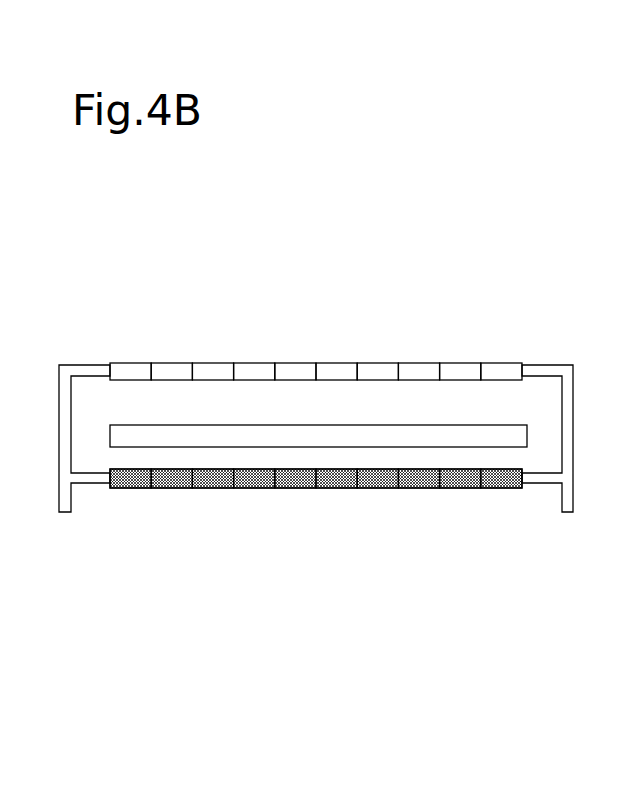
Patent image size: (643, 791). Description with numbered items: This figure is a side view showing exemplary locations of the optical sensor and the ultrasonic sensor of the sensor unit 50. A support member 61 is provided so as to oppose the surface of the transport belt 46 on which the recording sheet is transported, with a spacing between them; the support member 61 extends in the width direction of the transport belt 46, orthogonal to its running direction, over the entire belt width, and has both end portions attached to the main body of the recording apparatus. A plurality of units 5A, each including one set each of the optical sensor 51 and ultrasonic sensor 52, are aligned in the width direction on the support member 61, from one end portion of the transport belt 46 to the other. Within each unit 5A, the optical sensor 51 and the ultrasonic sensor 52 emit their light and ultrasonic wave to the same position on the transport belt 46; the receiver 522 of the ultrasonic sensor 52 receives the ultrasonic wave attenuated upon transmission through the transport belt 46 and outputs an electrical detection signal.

The unit 5A is at (127, 267).
The optical sensor 51 is at (130, 363).
The transport belt 46 is at (513, 425).
The receiver 522 is at (125, 488).
The ultrasonic sensor 52 is at (316, 478).
The support member 61 is at (90, 365).
The sensor unit 50 is at (533, 358).